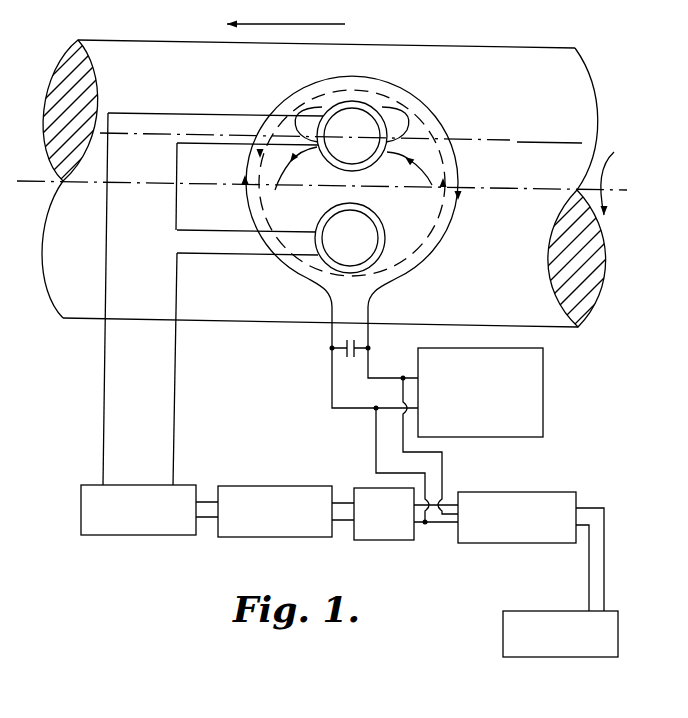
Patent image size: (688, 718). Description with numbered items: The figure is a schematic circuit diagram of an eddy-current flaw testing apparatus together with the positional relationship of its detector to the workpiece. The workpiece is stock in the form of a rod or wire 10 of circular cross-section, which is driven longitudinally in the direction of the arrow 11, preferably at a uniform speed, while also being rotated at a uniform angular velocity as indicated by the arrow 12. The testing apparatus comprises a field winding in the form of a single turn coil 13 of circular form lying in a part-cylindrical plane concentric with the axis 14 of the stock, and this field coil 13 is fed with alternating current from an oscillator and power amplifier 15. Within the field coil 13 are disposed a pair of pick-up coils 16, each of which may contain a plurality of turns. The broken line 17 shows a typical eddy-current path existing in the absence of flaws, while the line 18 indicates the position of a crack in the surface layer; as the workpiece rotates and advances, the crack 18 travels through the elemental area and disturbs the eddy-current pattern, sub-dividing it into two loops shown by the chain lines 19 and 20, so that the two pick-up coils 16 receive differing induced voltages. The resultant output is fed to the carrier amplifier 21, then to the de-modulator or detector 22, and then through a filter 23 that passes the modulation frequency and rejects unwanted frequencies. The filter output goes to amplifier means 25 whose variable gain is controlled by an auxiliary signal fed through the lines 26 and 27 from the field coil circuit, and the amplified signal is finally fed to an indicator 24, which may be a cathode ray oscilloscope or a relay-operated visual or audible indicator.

The rod or wire 10 is at (527, 50).
The arrow 11 is at (345, 24).
The arrow 12 is at (616, 172).
The single turn coil 13 is at (427, 107).
The axis 14 is at (30, 181).
The oscillator and power amplifier 15 is at (543, 378).
The pick-up coils 16 is at (322, 112).
The broken line 17 is at (453, 224).
The line 18 is at (118, 113).
The chain line 19 is at (352, 135).
The chain line 20 is at (452, 157).
The carrier amplifier 21 is at (150, 538).
The de-modulator or detector 22 is at (290, 540).
The filter 23 is at (383, 540).
The indicator 24 is at (551, 657).
The amplifier means 25 is at (508, 544).
The line 26 is at (442, 462).
The line 27 is at (376, 433).